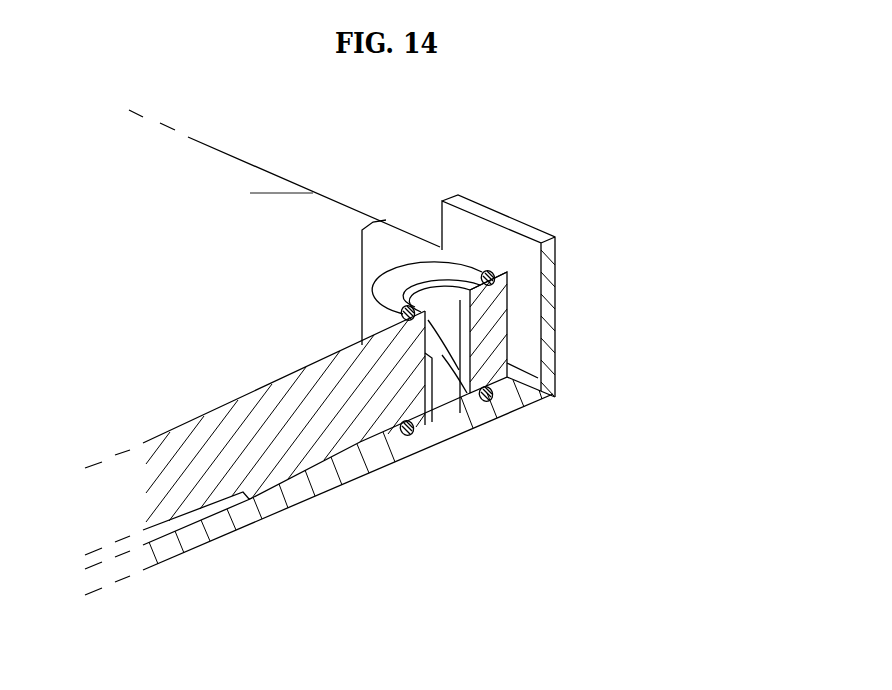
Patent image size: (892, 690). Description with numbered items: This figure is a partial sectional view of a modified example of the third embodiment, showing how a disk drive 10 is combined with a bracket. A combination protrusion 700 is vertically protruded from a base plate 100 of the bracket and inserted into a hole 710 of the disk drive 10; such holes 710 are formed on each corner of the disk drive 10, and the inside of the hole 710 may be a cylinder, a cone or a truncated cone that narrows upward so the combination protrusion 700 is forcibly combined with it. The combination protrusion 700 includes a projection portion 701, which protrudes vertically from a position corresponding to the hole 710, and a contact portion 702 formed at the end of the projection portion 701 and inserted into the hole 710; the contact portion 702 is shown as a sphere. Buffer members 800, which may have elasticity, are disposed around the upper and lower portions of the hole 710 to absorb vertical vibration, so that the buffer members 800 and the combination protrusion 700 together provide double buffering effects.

The disk drive 10 is at (330, 225).
The buffer member 800 is at (425, 273).
The hole 710 is at (457, 298).
The contact portion 702 is at (453, 333).
The projection portion 701 is at (450, 374).
The combination protrusion 700 is at (416, 437).
The base plate 100 is at (227, 533).